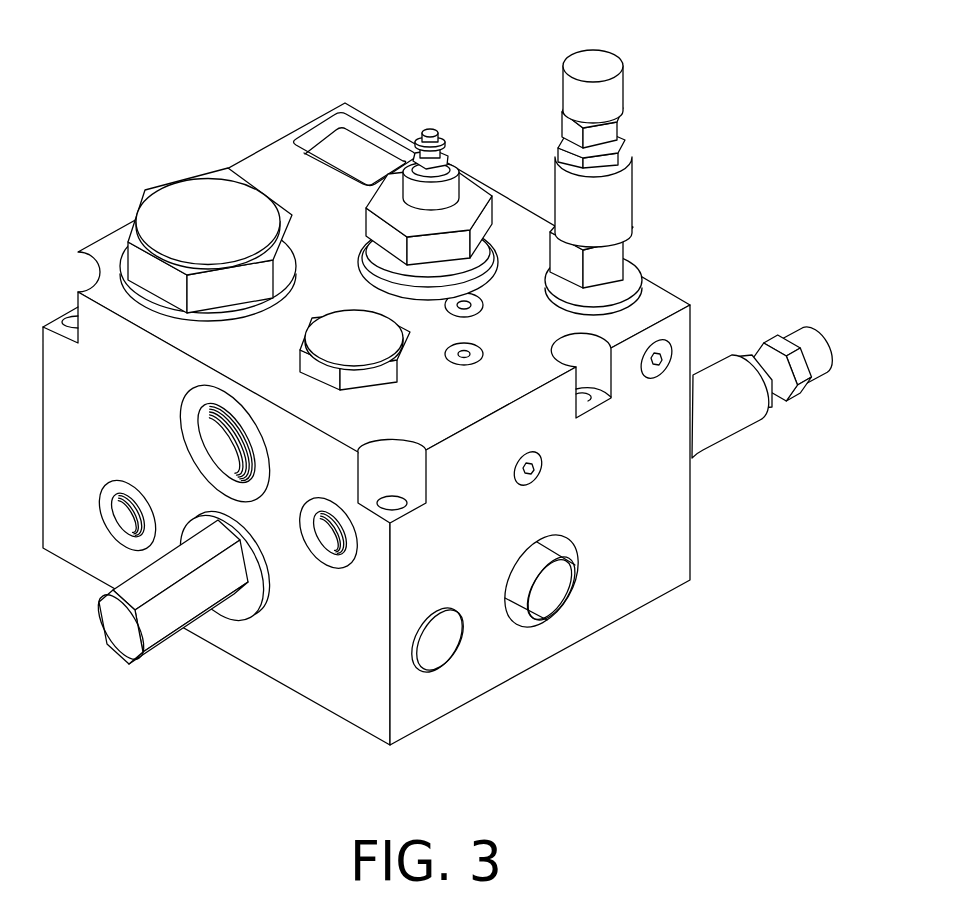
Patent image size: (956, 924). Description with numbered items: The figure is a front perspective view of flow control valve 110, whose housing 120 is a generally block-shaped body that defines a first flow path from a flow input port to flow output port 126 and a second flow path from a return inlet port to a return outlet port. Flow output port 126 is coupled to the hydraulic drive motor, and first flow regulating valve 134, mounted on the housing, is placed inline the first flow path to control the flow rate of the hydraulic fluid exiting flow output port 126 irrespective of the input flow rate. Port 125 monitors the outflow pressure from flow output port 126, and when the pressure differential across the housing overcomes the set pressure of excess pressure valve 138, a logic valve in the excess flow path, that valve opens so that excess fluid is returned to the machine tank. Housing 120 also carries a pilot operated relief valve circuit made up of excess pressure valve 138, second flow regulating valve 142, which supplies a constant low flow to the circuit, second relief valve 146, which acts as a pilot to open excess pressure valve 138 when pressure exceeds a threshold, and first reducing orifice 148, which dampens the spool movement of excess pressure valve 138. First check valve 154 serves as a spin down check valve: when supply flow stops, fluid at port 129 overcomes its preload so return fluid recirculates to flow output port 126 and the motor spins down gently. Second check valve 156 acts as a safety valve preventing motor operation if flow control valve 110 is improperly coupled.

The flow control valve 110 is at (437, 384).
The housing 120 is at (428, 736).
The port 125 is at (322, 570).
The flow output port 126 is at (200, 424).
The port 129 is at (112, 498).
The first flow regulating valve 134 is at (462, 190).
The excess pressure valve 138 is at (175, 623).
The second flow regulating valve 142 is at (557, 597).
The second relief valve 146 is at (635, 248).
The first reducing orifice 148 is at (440, 648).
The first check valve 154 is at (346, 338).
The second check valve 156 is at (187, 192).